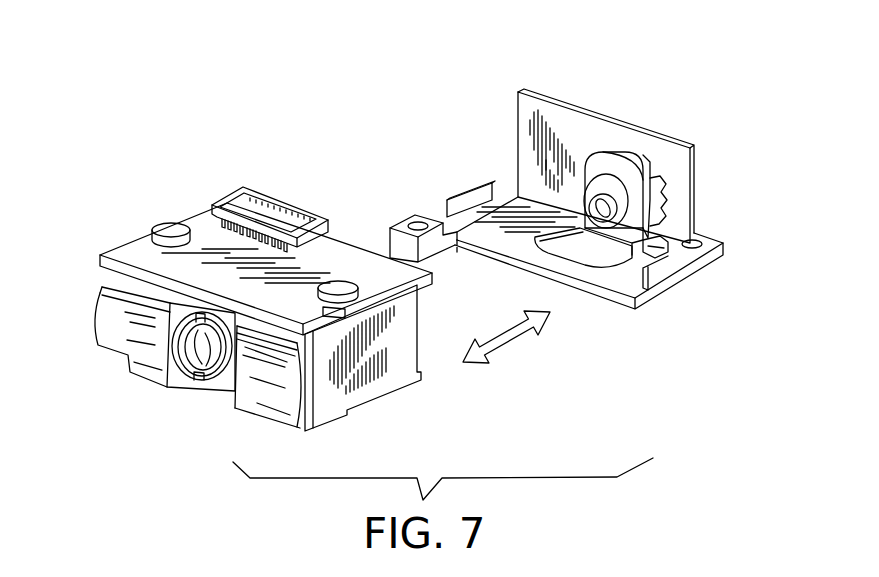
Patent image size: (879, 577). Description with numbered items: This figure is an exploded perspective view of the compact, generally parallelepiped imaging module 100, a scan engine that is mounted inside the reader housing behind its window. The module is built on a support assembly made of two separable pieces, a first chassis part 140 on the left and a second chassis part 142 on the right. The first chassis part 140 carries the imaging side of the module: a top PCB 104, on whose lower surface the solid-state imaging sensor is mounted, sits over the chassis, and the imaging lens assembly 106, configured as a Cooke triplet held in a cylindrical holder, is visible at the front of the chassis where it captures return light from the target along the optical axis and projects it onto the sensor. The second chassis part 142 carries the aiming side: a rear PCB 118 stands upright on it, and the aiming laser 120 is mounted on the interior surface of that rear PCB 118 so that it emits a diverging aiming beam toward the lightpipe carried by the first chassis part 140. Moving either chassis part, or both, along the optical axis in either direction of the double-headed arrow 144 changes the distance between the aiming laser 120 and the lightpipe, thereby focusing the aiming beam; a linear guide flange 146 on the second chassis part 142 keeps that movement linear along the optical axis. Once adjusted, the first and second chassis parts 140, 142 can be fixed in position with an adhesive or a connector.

The imaging module 100 is at (473, 45).
The top PCB 104 is at (130, 258).
The imaging lens assembly 106 is at (186, 381).
The rear PCB 118 is at (578, 125).
The aiming laser 120 is at (605, 192).
The first chassis part 140 is at (120, 396).
The second chassis part 142 is at (681, 317).
The double-headed arrow 144 is at (510, 335).
The linear guide flange 146 is at (463, 190).